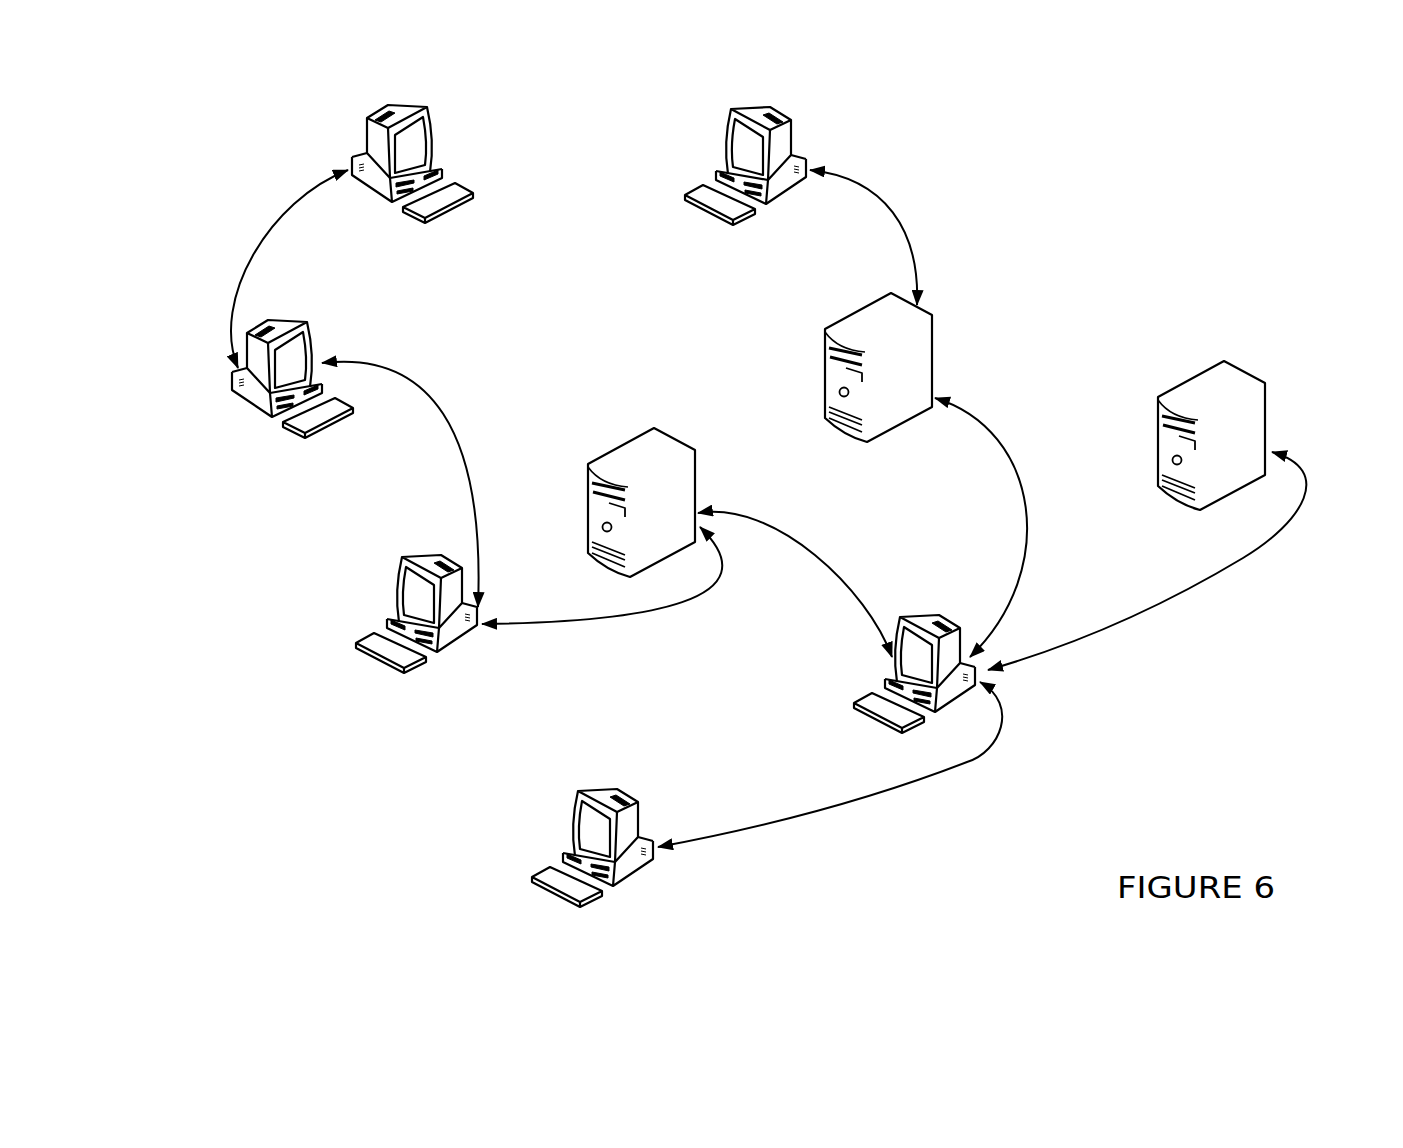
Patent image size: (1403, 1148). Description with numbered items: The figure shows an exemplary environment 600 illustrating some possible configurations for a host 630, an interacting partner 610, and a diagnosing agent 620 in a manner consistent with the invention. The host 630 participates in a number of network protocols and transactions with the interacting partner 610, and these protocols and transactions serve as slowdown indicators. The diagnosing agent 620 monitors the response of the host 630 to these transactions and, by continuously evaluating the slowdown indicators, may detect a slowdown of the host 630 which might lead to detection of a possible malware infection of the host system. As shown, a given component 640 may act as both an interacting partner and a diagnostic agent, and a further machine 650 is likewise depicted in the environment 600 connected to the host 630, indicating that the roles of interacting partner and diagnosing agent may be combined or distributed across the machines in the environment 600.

The exemplary environment 600 is at (848, 928).
The interacting partner 610 is at (732, 105).
The diagnosing agent 620 is at (695, 478).
The host 630 is at (858, 705).
The component acting as both interacting partner and diagnostic agent 640 is at (622, 880).
The diagnosing agent / interacting partner server 650 is at (1157, 438).